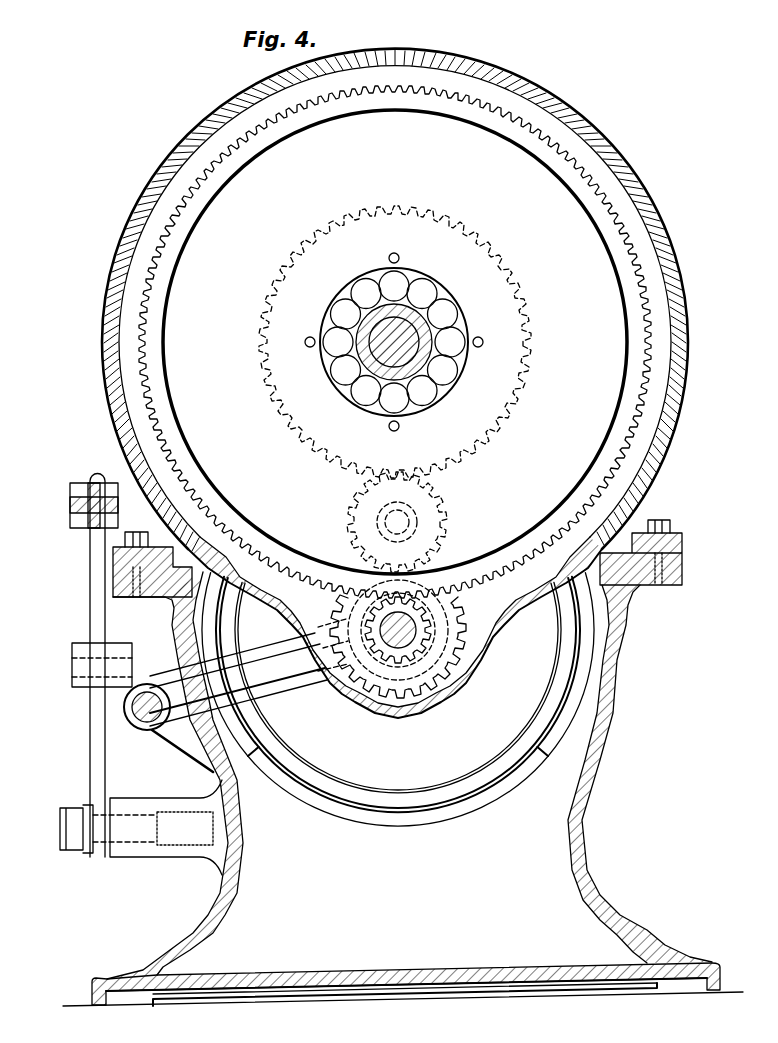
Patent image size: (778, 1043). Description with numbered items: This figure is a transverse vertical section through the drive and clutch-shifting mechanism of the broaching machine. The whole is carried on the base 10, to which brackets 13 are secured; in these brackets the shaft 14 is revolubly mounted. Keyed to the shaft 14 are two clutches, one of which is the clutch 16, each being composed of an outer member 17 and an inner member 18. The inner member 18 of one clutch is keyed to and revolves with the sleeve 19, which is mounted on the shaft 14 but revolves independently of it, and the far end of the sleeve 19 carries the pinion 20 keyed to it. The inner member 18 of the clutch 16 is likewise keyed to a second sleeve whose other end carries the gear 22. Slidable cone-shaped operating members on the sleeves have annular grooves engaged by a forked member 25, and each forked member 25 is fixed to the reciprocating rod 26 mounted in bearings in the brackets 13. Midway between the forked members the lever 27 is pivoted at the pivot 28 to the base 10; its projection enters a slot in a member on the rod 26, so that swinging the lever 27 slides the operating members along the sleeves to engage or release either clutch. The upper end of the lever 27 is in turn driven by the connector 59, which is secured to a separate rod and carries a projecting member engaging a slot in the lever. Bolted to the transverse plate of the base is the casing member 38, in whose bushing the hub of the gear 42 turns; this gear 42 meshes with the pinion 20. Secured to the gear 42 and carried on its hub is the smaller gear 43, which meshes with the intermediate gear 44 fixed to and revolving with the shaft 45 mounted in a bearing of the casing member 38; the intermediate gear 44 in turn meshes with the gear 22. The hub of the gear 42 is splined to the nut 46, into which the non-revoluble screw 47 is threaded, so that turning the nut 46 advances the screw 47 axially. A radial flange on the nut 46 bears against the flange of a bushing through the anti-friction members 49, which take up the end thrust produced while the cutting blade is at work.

The base 10 is at (580, 833).
The brackets 13 is at (180, 752).
The shaft 14 is at (416, 752).
The clutch 16 is at (387, 812).
The outer member 17 is at (363, 768).
The inner member 18 is at (430, 798).
The sleeve 19 is at (424, 645).
The pinion 20 is at (417, 643).
The gear 22 is at (371, 688).
The forked member 25 is at (280, 686).
The reciprocating rod 26 is at (133, 710).
The lever 27 is at (92, 604).
The pivot 28 is at (60, 828).
The casing member 38 is at (630, 172).
The gear 42 is at (640, 257).
The smaller gear 43 is at (527, 351).
The intermediate gear 44 is at (438, 493).
The shaft 45 is at (405, 522).
The nut 46 is at (383, 358).
The non-revoluble screw 47 is at (412, 318).
The anti-friction members 49 is at (446, 310).
The connector 59 is at (92, 480).